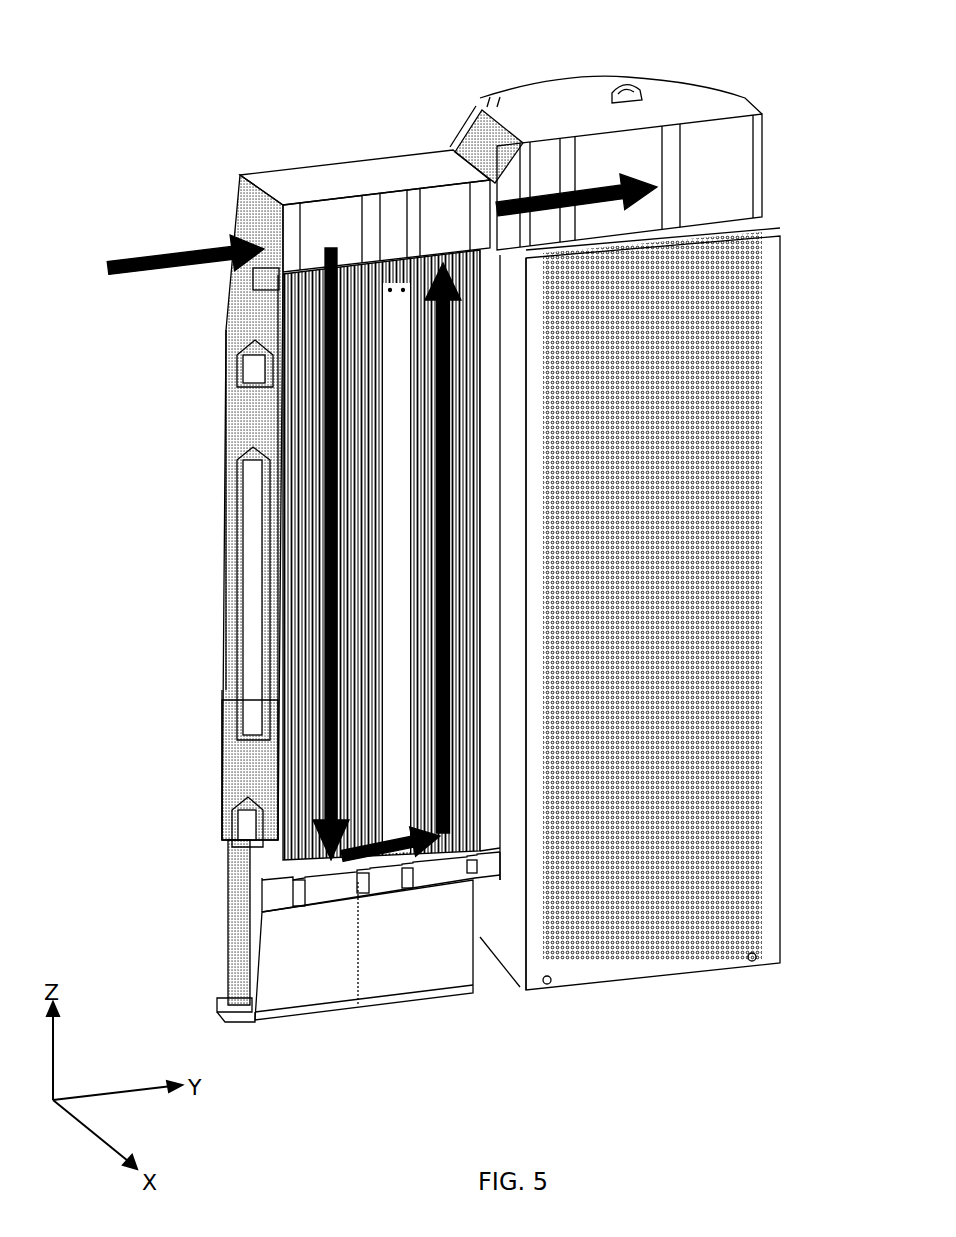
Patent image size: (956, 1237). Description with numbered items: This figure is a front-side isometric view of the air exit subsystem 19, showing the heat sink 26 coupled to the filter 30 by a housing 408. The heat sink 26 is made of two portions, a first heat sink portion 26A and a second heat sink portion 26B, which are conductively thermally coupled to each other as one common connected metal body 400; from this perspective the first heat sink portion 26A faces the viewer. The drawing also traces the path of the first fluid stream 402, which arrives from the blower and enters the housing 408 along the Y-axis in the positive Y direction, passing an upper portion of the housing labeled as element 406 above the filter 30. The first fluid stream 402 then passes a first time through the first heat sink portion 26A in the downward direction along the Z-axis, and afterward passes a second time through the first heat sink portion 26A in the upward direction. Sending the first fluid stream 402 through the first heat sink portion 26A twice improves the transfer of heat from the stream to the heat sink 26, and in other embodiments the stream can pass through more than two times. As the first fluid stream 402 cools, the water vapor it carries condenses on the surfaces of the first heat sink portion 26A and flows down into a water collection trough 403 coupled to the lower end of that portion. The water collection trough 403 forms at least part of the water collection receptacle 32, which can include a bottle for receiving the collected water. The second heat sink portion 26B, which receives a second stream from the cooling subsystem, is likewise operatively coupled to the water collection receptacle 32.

The air exit subsystem 19 is at (508, 71).
The heat sink 26 is at (234, 415).
The first heat sink portion 26A is at (283, 755).
The second heat sink portion 26B is at (262, 967).
The filter 30 is at (773, 386).
The water collection receptacle 32 is at (262, 891).
The common connected metal body 400 is at (230, 441).
The first fluid stream 402 is at (183, 256).
The water collection trough 403 is at (300, 879).
The upper plenum 406 is at (585, 195).
The housing 408 is at (334, 218).